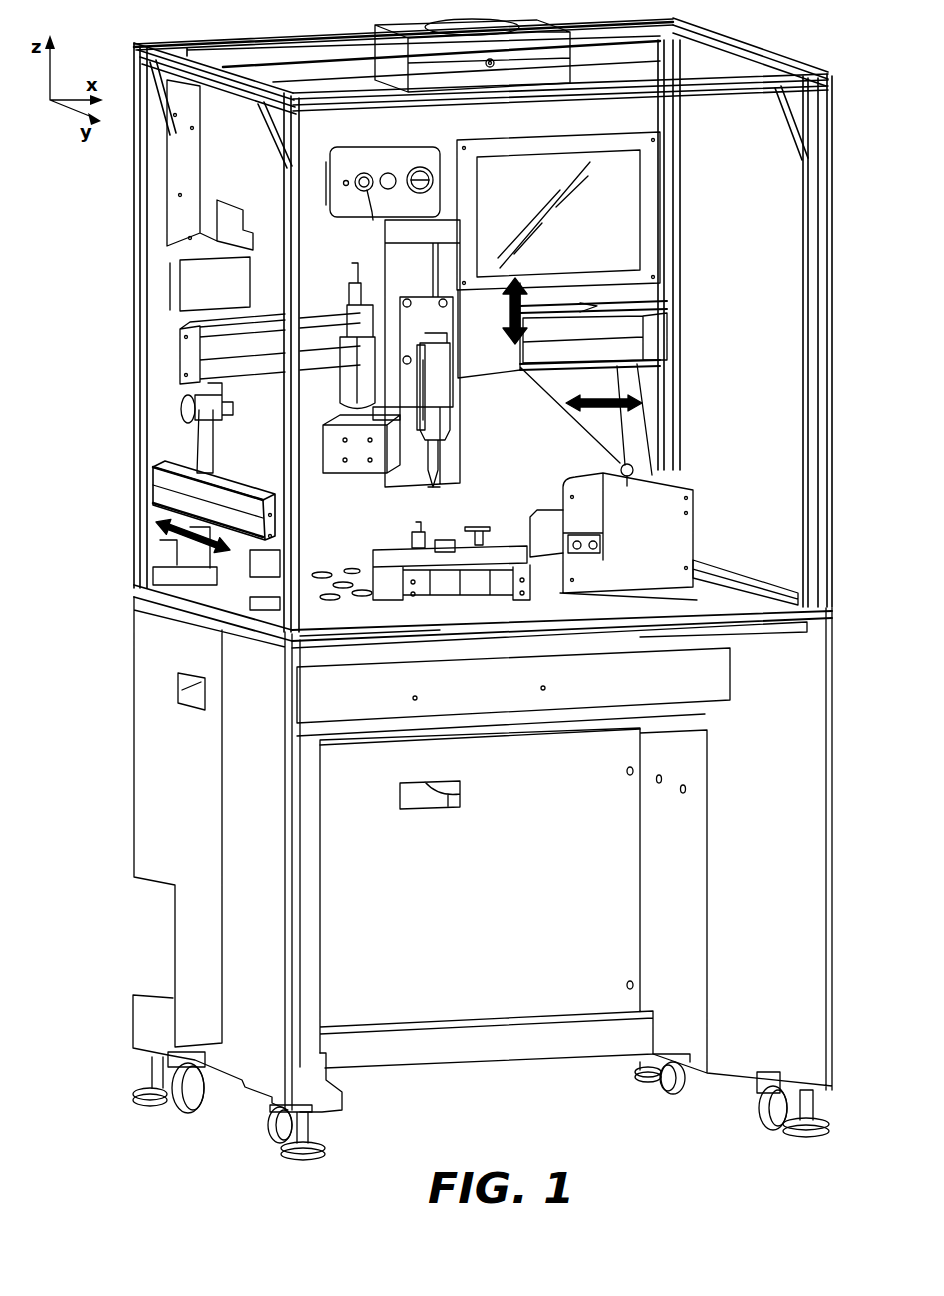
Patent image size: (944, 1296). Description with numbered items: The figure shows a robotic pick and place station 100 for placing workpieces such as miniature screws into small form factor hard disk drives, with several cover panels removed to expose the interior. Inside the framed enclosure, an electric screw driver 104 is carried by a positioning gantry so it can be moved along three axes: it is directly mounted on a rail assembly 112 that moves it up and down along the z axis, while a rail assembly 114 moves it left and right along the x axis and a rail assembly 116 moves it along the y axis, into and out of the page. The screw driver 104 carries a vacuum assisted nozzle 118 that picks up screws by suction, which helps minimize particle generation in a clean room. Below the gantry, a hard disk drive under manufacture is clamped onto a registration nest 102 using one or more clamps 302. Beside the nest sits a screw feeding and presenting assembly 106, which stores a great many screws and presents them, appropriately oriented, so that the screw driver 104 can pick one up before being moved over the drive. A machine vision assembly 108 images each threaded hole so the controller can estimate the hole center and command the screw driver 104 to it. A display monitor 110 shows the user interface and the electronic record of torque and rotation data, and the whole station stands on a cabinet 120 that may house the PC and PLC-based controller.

The robotic station 100 is at (864, 89).
The registration nest 102 is at (460, 541).
The electric screw driver 104 is at (447, 416).
The screw feeding and presenting assembly 106 is at (566, 482).
The machine vision assembly 108 is at (349, 315).
The display monitor 110 is at (568, 162).
The rail assembly 112 is at (432, 323).
The rail assembly 114 is at (572, 346).
The rail assembly 116 is at (209, 487).
The vacuum assisted nozzle 118 is at (434, 493).
The cabinet 120 is at (478, 908).
The clamps 302 is at (417, 533).